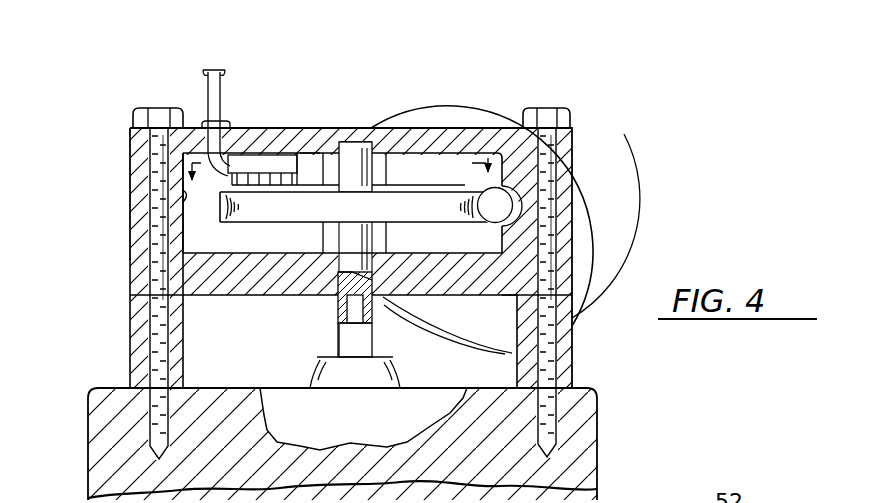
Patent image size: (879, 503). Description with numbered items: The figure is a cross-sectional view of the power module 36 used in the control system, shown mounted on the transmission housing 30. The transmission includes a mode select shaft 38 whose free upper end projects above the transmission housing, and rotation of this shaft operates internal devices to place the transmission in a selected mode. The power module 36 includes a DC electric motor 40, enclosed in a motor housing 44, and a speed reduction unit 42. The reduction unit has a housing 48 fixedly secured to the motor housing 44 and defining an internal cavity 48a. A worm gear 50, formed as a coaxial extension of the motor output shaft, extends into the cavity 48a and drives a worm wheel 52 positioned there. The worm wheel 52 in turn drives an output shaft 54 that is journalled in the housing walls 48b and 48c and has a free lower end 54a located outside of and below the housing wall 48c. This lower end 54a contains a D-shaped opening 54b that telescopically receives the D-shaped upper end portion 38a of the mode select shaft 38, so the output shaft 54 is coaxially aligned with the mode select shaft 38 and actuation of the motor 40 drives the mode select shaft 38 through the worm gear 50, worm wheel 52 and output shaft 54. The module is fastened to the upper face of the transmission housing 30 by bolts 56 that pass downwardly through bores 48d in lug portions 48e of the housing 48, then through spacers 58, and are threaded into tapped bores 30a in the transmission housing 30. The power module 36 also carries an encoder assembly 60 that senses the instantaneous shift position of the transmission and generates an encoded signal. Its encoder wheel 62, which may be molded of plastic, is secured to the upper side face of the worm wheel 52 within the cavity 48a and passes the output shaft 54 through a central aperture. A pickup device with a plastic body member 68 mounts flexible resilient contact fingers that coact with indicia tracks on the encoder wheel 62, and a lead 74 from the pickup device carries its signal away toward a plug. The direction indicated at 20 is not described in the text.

The direction of movement 20 is at (209, 179).
The transmission housing 30 is at (88, 471).
The tapped bores 30a is at (152, 408).
The power module 36 is at (425, 65).
The mode select shaft 38 is at (340, 341).
The D-shaped upper end portion 38a is at (375, 318).
The DC electric motor 40 is at (603, 100).
The speed reduction unit 42 is at (504, 122).
The motor housing 44 is at (620, 136).
The reduction unit housing 48 is at (402, 127).
The internal cavity 48a is at (182, 198).
The housing wall 48b is at (445, 131).
The housing wall 48c is at (273, 288).
The bores 48d is at (150, 145).
The lug portions 48e is at (132, 240).
The worm gear 50 is at (498, 206).
The worm wheel 52 is at (370, 216).
The output shaft 54 is at (362, 236).
The free lower end 54a is at (377, 307).
The D-shaped opening 54b is at (360, 325).
The bolts 56 is at (146, 108).
The spacers 58 is at (132, 346).
The encoder assembly 60 is at (310, 170).
The encoder wheel 62 is at (460, 183).
The plastic body member 68 is at (258, 165).
The lead 74 is at (208, 89).